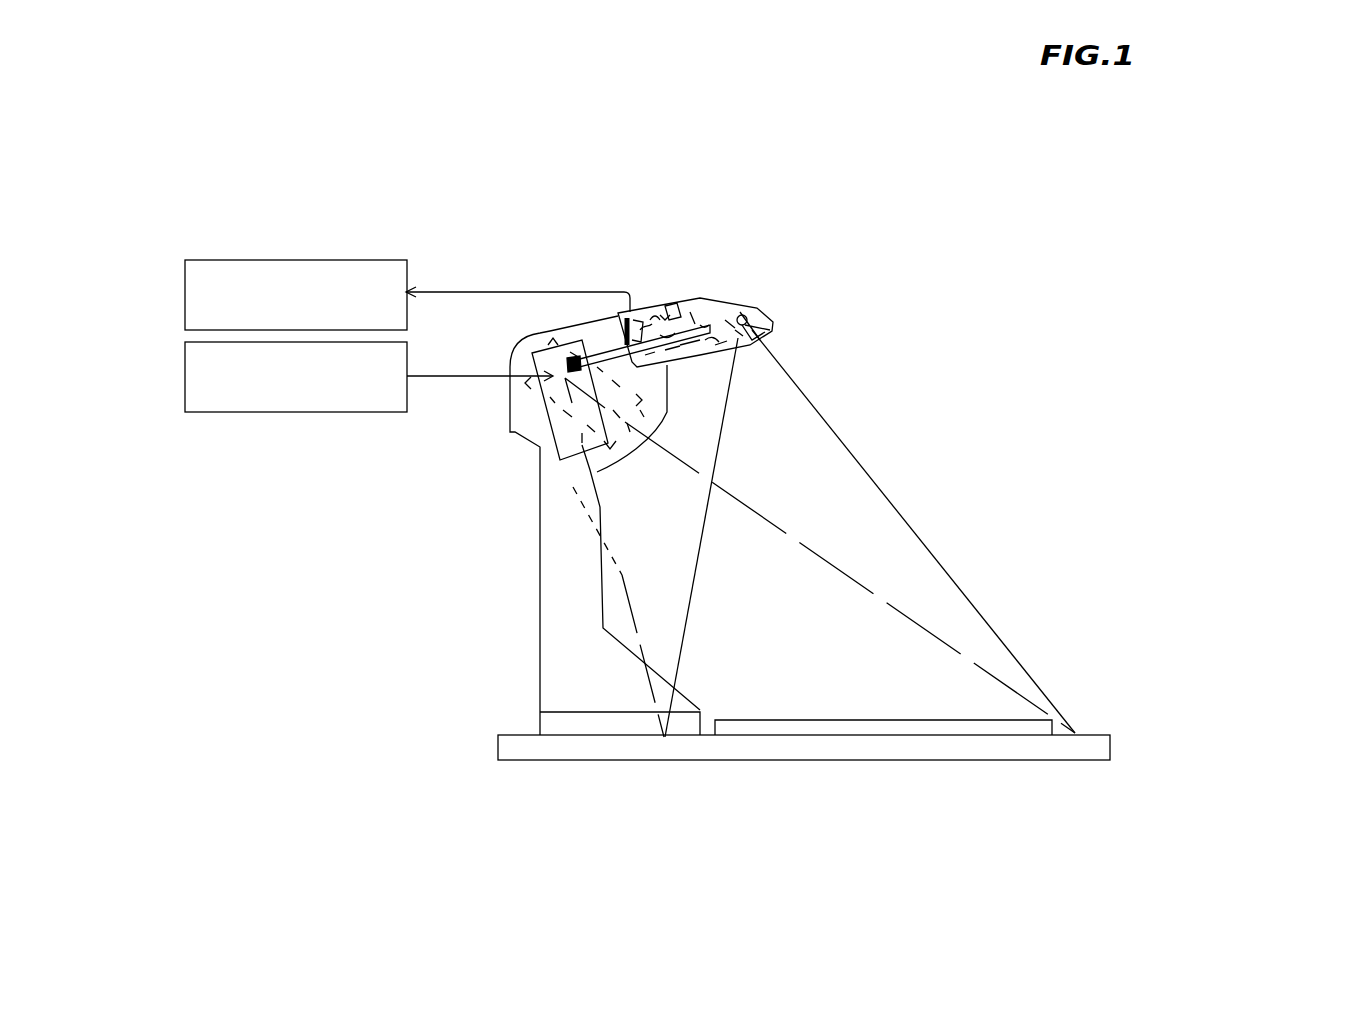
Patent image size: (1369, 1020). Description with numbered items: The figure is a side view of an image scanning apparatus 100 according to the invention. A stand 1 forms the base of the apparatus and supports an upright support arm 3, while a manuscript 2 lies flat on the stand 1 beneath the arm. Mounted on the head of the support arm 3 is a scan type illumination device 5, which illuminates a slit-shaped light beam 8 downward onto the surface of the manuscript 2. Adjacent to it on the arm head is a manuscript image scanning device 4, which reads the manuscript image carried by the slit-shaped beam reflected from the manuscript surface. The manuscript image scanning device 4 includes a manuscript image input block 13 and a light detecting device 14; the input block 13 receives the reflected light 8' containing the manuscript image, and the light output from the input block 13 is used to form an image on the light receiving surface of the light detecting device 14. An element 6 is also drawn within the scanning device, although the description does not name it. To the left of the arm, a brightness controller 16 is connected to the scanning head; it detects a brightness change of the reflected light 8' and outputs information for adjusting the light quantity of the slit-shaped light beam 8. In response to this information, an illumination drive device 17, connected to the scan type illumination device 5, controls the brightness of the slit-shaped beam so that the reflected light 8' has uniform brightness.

The image scanning apparatus 100 is at (166, 181).
The stand 1 is at (1097, 735).
The manuscript 2 is at (832, 736).
The support arm 3 is at (557, 550).
The manuscript image scanning device 4 is at (707, 302).
The scan type illumination device 5 is at (562, 338).
The lens 6 is at (673, 305).
The slit-shaped light beam 8 is at (496, 537).
The reflected light containing the manuscript image 8' is at (992, 531).
The manuscript image input block 13 is at (773, 325).
The light detecting device 14 is at (605, 313).
The brightness controller 16 is at (185, 290).
The illumination drive device 17 is at (185, 380).